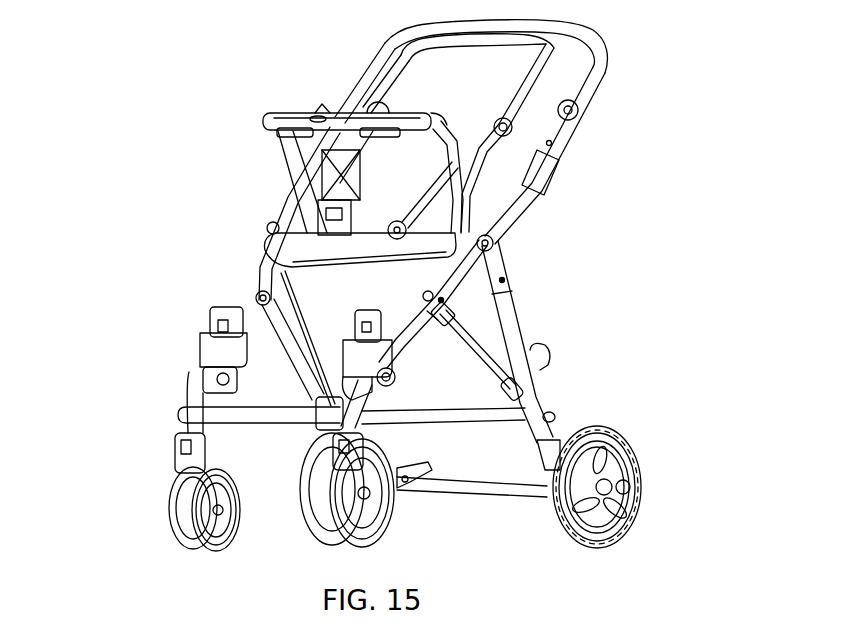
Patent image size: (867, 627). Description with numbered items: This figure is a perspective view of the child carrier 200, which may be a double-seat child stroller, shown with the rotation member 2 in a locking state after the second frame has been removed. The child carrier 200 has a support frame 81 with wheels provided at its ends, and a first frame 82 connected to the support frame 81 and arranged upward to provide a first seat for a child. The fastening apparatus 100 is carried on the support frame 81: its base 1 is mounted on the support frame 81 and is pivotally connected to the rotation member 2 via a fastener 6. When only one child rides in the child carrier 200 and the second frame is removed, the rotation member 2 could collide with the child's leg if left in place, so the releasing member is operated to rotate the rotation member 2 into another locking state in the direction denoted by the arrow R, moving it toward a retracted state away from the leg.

The child carrier 200 is at (316, 37).
The first frame 82 is at (280, 123).
The support frame 81 is at (567, 265).
The fastener 6 is at (395, 378).
The rotation member 2 is at (347, 352).
The fastening apparatus 100 is at (345, 377).
The base 1 is at (385, 383).
The arrow indicating rotation direction R is at (383, 315).